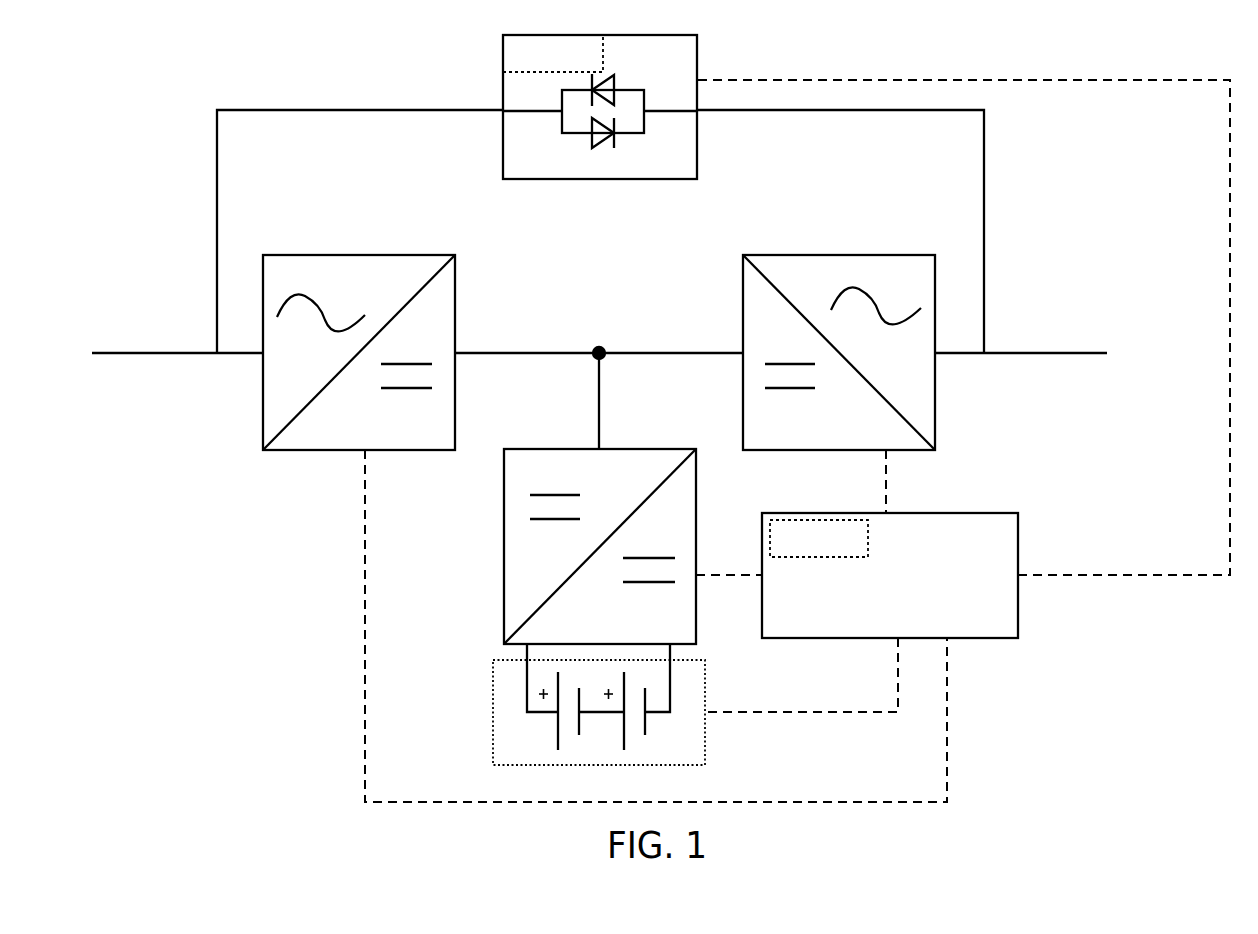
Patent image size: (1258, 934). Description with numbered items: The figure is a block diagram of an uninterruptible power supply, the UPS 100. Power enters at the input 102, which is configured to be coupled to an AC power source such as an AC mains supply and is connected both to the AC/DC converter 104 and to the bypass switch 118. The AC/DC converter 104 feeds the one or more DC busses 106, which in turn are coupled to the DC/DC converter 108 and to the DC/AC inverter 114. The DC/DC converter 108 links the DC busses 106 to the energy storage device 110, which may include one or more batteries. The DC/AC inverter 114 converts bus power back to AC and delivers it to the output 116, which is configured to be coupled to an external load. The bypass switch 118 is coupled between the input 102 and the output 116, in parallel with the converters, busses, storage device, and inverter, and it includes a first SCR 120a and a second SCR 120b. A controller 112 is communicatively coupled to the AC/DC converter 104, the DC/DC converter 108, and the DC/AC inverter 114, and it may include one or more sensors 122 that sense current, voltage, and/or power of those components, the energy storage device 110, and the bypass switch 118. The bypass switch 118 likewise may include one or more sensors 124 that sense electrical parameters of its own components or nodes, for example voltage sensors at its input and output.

The UPS 100 is at (152, 152).
The input 102 is at (115, 352).
The AC/DC converter 104 is at (358, 255).
The DC busses 106 is at (597, 348).
The DC/DC converter 108 is at (504, 548).
The energy storage device 110 is at (493, 712).
The controller 112 is at (1018, 546).
The DC/AC inverter 114 is at (845, 255).
The output 116 is at (1097, 352).
The bypass switch 118 is at (503, 160).
The first SCR 120a is at (612, 82).
The second SCR 120b is at (598, 137).
The sensors 122 is at (770, 536).
The sensors 124 is at (503, 52).